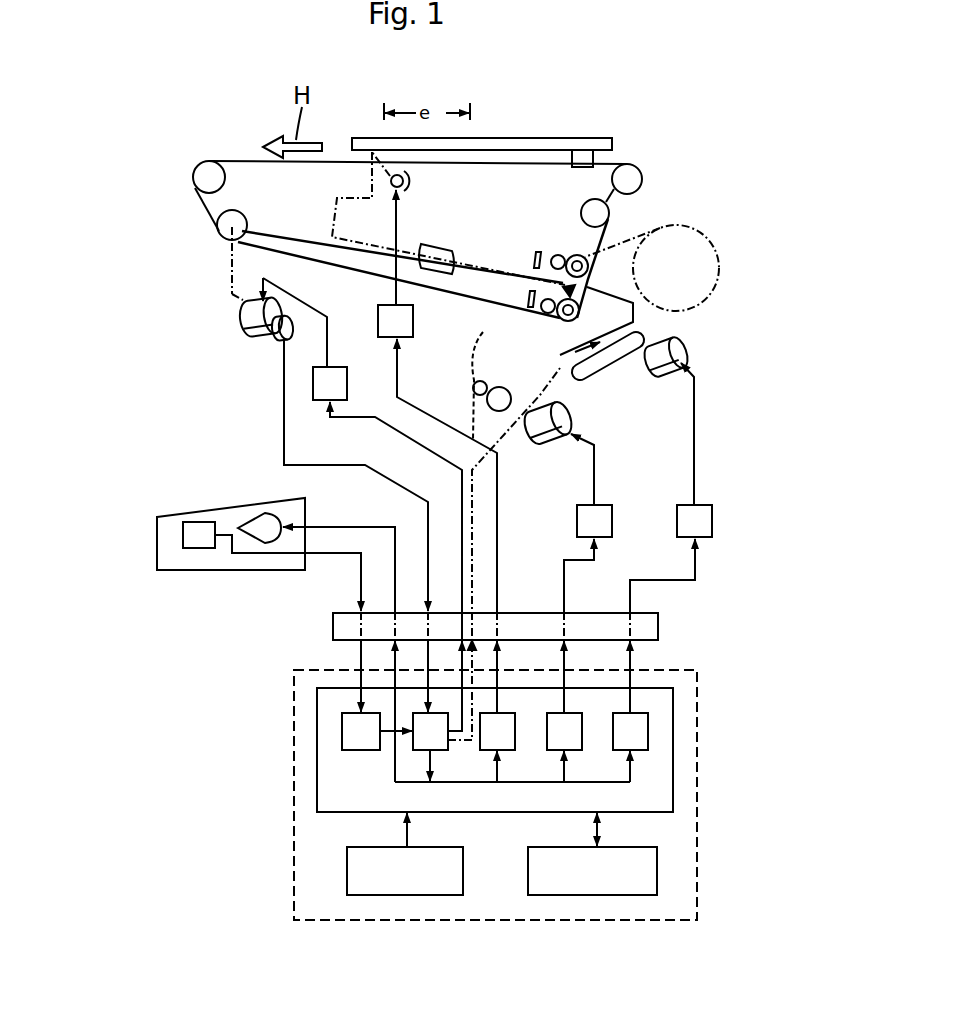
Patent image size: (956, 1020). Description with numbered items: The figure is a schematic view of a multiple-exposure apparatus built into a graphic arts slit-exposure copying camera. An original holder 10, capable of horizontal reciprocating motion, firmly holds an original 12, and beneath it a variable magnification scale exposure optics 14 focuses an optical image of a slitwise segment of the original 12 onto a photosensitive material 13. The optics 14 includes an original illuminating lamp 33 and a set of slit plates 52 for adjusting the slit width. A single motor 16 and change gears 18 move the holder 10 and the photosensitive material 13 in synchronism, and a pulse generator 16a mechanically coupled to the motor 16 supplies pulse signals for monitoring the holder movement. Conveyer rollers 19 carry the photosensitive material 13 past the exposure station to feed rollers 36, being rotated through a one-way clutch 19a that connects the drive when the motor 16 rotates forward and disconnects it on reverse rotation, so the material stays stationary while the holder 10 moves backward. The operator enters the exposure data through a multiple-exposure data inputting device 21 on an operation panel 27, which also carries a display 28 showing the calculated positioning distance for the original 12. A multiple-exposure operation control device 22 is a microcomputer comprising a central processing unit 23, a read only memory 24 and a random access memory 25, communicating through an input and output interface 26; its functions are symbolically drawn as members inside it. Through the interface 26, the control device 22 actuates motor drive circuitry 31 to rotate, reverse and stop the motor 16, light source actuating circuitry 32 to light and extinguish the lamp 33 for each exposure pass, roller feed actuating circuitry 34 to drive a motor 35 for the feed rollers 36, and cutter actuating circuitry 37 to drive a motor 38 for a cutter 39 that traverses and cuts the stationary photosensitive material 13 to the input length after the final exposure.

The original holder 10 is at (565, 137).
The original 12 is at (450, 151).
The photosensitive material 13 is at (545, 318).
The variable magnification scale exposure optics 14 is at (441, 215).
The motor 16 is at (247, 329).
The pulse generator 16a is at (280, 341).
The change gears 18 is at (600, 322).
The conveyer rollers 19 is at (589, 266).
The one-way clutch 19a is at (572, 256).
The multiple-exposure data inputting device 21 is at (192, 521).
The multiple-exposure operation control device 22 is at (698, 730).
The central processing unit 23 is at (316, 736).
The read only memory 24 is at (437, 896).
The random access memory 25 is at (618, 896).
The input and output interface 26 is at (659, 623).
The operation panel 27 is at (235, 572).
The display 28 is at (258, 512).
The motor drive circuitry 31 is at (313, 383).
The light source actuating circuitry 32 is at (378, 311).
The original illuminating lamp 33 is at (393, 190).
The roller feed actuating circuitry 34 is at (591, 485).
The motor 35 is at (534, 436).
The feed rollers 36 is at (506, 392).
The cutter actuating circuitry 37 is at (694, 450).
The motor 38 is at (652, 371).
The cutter 39 is at (583, 290).
The slit plates 52 is at (534, 259).